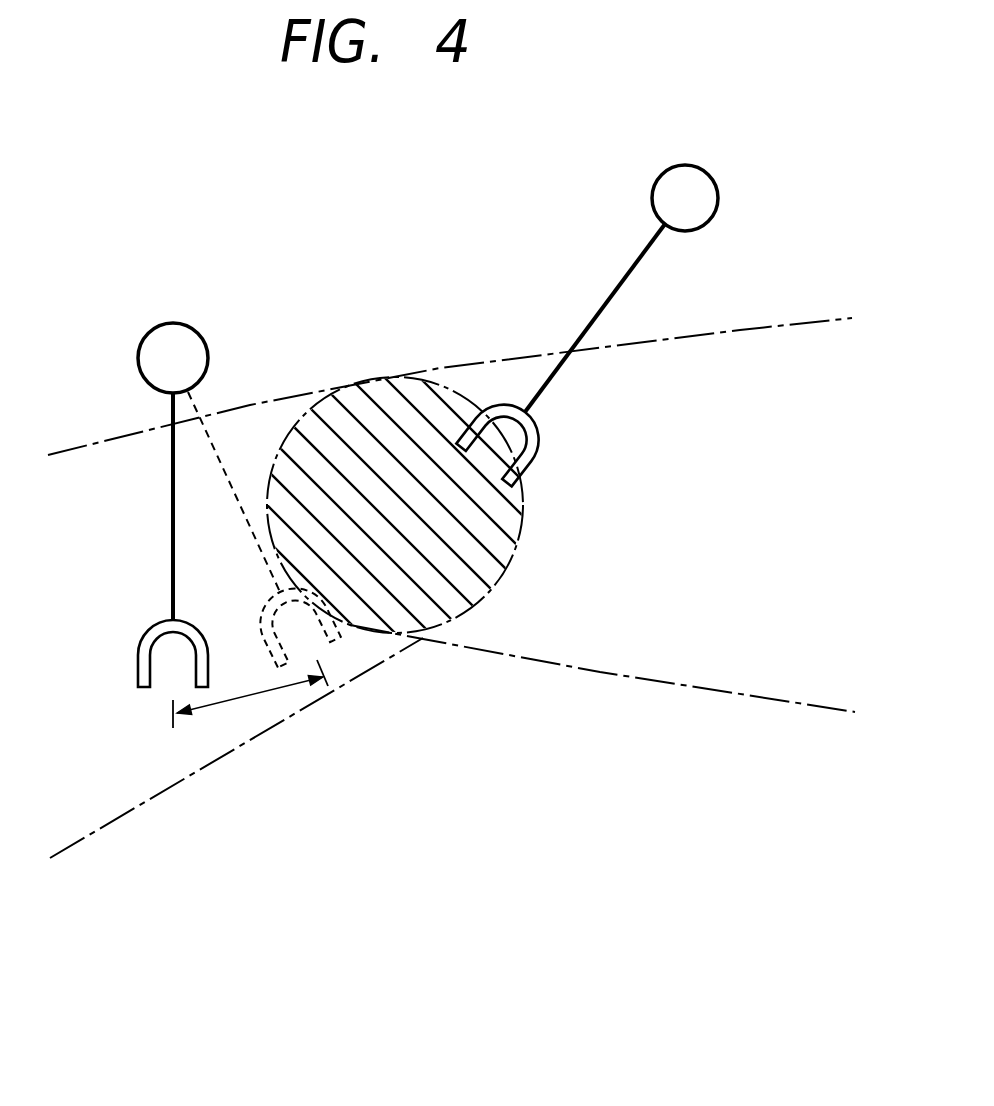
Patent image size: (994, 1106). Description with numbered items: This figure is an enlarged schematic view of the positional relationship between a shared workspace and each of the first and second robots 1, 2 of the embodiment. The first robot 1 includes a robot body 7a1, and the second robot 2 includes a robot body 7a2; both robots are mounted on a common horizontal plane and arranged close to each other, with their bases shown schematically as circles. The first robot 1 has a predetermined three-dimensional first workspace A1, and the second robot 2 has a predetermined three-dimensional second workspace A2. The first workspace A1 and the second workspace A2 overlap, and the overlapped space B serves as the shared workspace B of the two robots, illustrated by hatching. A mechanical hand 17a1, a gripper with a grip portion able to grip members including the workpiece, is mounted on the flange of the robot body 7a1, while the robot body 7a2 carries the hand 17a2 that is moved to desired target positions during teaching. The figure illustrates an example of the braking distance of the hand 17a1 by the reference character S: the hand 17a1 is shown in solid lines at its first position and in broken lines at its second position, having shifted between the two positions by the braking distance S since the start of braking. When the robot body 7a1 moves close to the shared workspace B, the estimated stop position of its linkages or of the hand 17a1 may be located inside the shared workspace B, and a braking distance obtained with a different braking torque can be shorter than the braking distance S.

The first robot 1 is at (195, 299).
The second robot 2 is at (735, 163).
The robot body 7a1 is at (227, 446).
The robot body 7a2 is at (569, 382).
The mechanical hand 17a1 is at (138, 656).
The hand 17a2 is at (540, 452).
The shared workspace B is at (467, 611).
The braking distance S is at (250, 697).
The first workspace A1 is at (86, 824).
The second workspace A2 is at (822, 697).